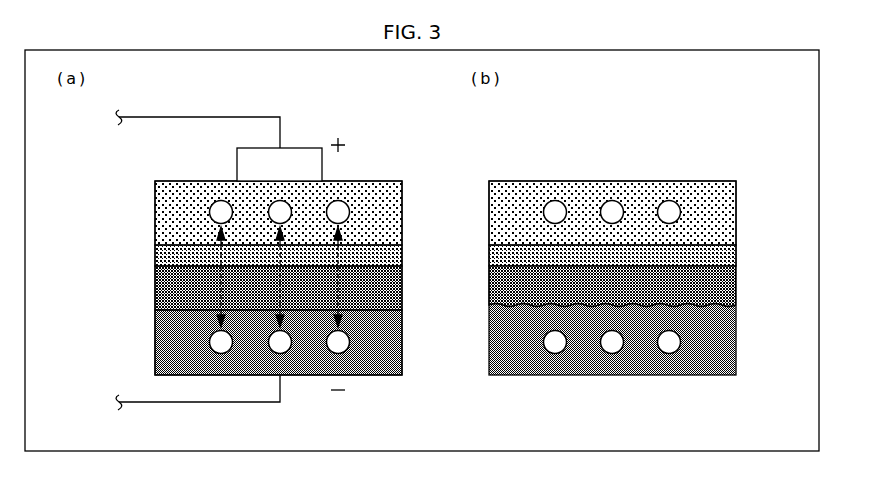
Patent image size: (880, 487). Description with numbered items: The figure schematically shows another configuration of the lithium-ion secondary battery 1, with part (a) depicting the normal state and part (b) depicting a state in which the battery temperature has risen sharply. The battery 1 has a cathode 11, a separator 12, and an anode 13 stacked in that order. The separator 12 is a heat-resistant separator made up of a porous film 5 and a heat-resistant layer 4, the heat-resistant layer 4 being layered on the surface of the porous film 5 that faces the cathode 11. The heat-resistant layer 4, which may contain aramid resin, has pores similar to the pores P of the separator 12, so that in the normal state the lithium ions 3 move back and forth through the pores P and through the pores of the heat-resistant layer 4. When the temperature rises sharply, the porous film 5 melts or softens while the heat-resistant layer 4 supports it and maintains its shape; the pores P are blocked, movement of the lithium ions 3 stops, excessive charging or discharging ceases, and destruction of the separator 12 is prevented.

The lithium-ion secondary battery 1 is at (428, 278).
The lithium ions 3 is at (221, 204).
The heat-resistant layer 4 is at (155, 258).
The porous film 5 is at (115, 247).
The cathode 11 is at (155, 213).
The separator 12 is at (444, 277).
The anode 13 is at (444, 340).
The pores P is at (225, 262).